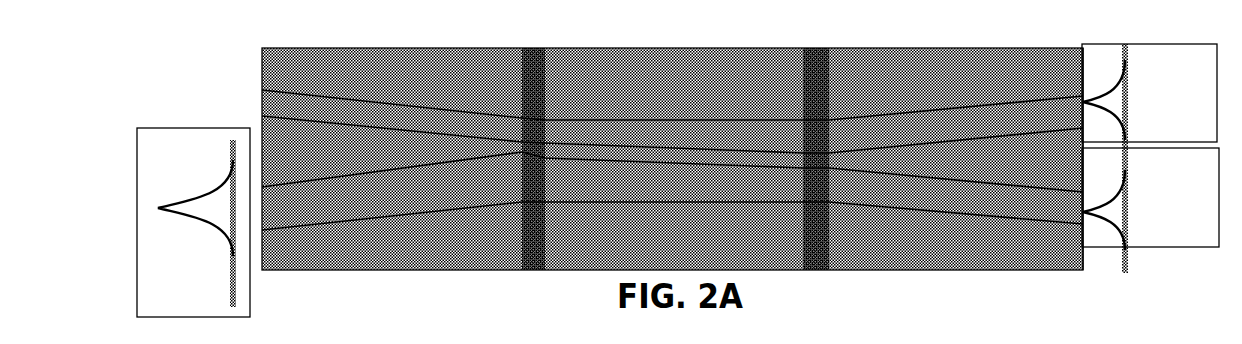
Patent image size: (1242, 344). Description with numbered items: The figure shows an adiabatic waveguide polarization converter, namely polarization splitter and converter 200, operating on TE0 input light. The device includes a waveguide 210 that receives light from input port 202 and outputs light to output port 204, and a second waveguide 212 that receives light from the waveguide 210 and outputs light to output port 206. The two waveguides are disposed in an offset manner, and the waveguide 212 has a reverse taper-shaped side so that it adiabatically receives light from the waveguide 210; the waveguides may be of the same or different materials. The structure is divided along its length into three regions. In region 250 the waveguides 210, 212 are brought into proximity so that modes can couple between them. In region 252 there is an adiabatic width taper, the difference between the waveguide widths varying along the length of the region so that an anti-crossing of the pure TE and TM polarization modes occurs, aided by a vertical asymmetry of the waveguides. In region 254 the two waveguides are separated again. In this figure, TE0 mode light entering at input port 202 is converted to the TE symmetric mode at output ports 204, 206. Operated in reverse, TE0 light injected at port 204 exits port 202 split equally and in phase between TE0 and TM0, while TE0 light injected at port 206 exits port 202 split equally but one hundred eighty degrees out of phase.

The polarization splitter and converter 200 is at (610, 163).
The input port 202 is at (193, 222).
The output port 204 is at (1150, 225).
The output port 206 is at (1149, 96).
The waveguide 210 is at (372, 203).
The waveguide 212 is at (297, 107).
The region 250 is at (403, 142).
The region 252 is at (687, 142).
The region 254 is at (956, 142).